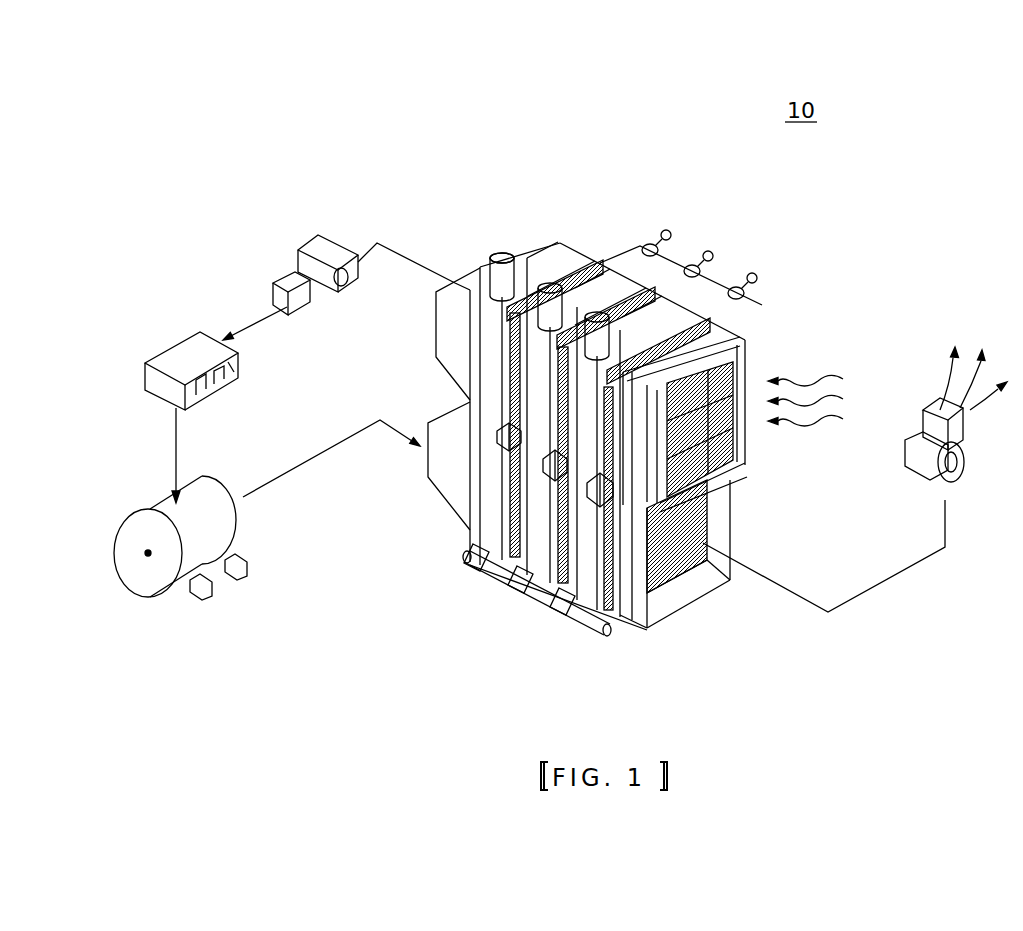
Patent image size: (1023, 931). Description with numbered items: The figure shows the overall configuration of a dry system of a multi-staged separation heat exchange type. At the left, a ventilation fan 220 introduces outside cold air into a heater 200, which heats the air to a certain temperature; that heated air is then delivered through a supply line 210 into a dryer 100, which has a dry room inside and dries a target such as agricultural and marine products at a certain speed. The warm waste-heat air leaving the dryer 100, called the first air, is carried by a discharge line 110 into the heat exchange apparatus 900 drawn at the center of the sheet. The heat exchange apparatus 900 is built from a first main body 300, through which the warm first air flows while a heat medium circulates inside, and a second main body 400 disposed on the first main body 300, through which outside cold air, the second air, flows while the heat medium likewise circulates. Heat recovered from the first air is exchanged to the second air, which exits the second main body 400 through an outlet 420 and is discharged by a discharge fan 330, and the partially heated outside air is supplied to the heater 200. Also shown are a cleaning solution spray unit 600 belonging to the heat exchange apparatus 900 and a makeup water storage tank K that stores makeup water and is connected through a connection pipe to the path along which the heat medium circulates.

The dryer 100 is at (243, 530).
The discharge line 110 is at (337, 447).
The heater 200 is at (167, 347).
The supply line 210 is at (175, 437).
The ventilation fan 220 is at (318, 236).
The first main body 300 is at (760, 518).
The discharge fan 330 is at (923, 410).
The second main body 400 is at (816, 269).
The outlet 420 is at (468, 282).
The cleaning solution spray unit 600 is at (723, 280).
The heat exchange apparatus 900 is at (852, 457).
The makeup water storage tank K is at (500, 252).